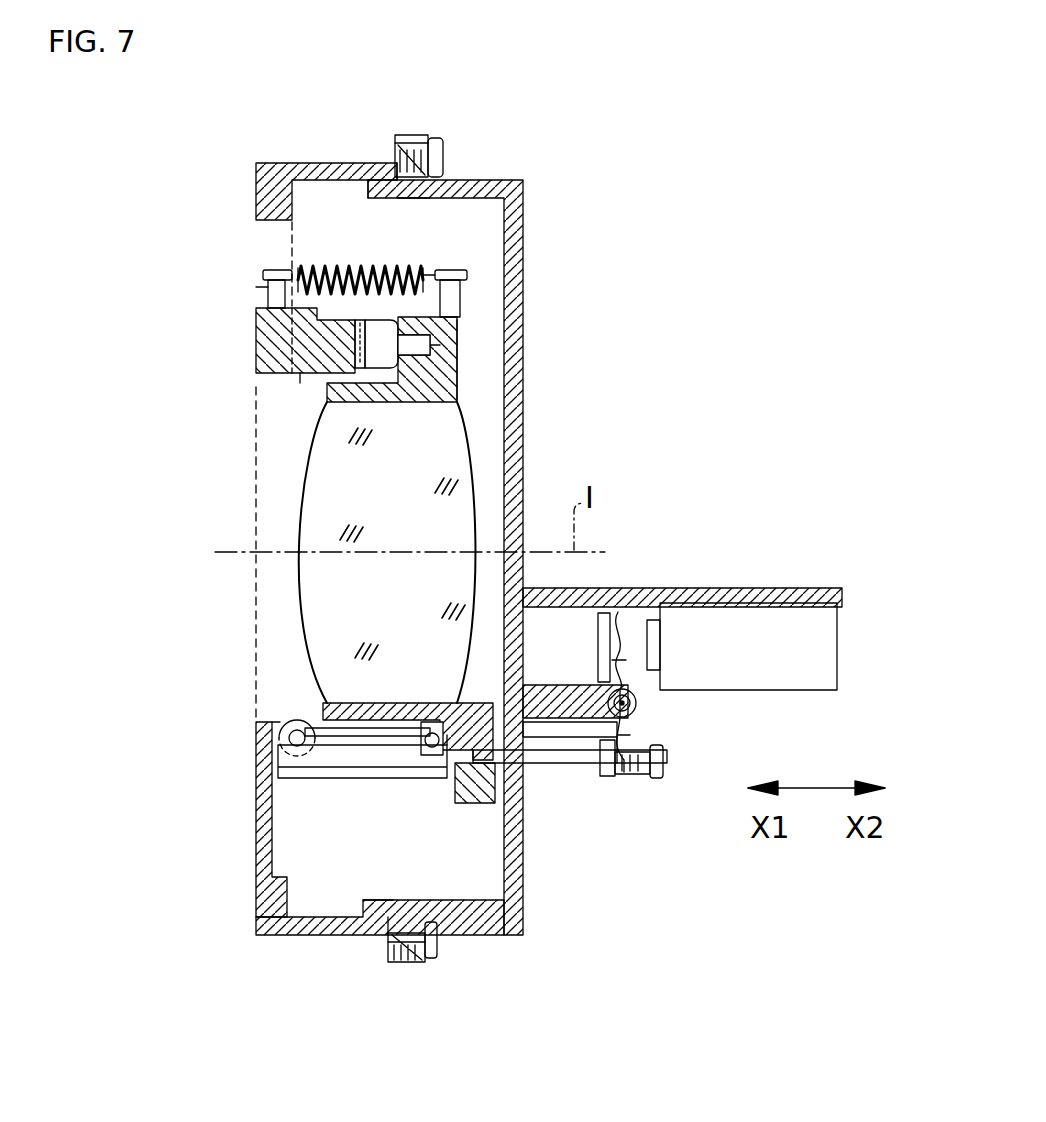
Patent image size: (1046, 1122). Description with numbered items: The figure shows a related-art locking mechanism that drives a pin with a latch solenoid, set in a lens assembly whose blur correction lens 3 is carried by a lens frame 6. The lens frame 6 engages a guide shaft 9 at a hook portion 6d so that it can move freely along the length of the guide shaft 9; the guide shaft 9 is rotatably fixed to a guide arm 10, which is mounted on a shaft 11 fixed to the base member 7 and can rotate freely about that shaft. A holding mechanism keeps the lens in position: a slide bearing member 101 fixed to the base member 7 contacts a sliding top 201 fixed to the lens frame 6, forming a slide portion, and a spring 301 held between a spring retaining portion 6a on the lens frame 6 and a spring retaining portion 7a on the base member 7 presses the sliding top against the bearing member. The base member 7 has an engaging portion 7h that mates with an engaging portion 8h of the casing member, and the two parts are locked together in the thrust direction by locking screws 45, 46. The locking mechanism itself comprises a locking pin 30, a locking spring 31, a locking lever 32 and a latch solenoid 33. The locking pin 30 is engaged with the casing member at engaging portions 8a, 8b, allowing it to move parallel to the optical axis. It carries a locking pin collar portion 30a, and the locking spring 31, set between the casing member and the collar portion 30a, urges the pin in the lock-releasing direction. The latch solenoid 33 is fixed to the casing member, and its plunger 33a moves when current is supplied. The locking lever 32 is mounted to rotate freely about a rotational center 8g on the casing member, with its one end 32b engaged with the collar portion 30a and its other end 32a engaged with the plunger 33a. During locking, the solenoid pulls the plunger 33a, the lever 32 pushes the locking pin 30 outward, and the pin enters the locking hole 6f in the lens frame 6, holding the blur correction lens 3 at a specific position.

The blur correction lens 3 is at (328, 438).
The lens frame 6 is at (433, 388).
The spring retaining portion 6a is at (462, 293).
The hook portion 6d is at (435, 755).
The locking hole 6f is at (473, 803).
The base member 7 is at (268, 347).
The spring retaining portion 7a is at (275, 299).
The engaging portion 7h is at (370, 178).
The engaging portion 8a is at (662, 783).
The engaging portion 8b is at (519, 813).
The rotational center 8g is at (636, 703).
The engaging portion 8h is at (398, 205).
The guide shaft 9 is at (420, 738).
The guide arm 10 is at (343, 752).
The shaft 11 is at (293, 725).
The locking pin 30 is at (582, 785).
The locking pin collar portion 30a is at (603, 773).
The locking spring 31 is at (548, 765).
The locking lever 32 is at (640, 670).
The other end of locking lever 32a is at (622, 612).
The one end of locking lever 32b is at (640, 735).
The latch solenoid 33 is at (797, 620).
The plunger 33a is at (598, 612).
The locking screw 45 is at (440, 157).
The locking screw 46 is at (437, 940).
The slide bearing member 101 is at (303, 385).
The sliding top 201 is at (403, 348).
The spring 301 is at (417, 264).